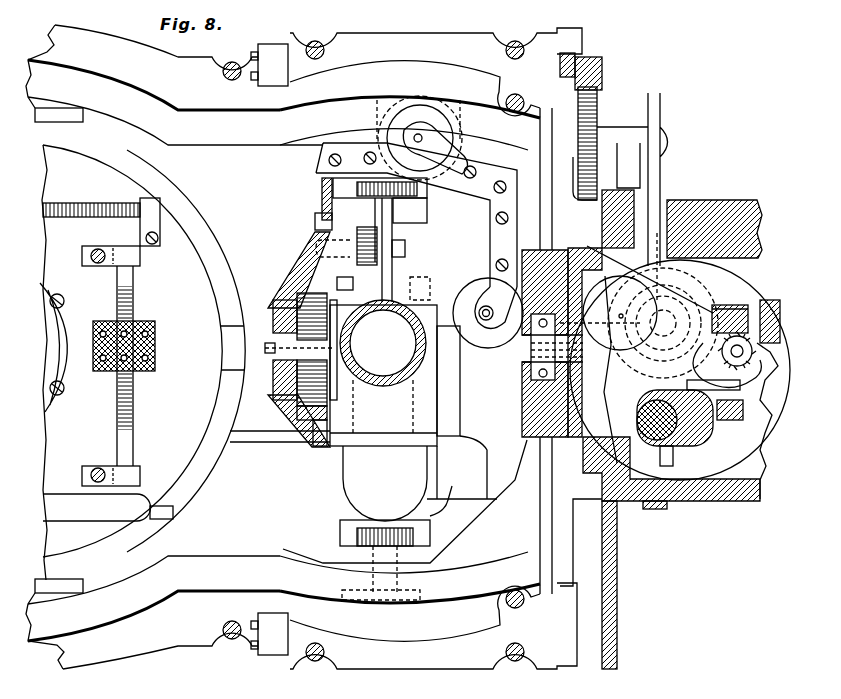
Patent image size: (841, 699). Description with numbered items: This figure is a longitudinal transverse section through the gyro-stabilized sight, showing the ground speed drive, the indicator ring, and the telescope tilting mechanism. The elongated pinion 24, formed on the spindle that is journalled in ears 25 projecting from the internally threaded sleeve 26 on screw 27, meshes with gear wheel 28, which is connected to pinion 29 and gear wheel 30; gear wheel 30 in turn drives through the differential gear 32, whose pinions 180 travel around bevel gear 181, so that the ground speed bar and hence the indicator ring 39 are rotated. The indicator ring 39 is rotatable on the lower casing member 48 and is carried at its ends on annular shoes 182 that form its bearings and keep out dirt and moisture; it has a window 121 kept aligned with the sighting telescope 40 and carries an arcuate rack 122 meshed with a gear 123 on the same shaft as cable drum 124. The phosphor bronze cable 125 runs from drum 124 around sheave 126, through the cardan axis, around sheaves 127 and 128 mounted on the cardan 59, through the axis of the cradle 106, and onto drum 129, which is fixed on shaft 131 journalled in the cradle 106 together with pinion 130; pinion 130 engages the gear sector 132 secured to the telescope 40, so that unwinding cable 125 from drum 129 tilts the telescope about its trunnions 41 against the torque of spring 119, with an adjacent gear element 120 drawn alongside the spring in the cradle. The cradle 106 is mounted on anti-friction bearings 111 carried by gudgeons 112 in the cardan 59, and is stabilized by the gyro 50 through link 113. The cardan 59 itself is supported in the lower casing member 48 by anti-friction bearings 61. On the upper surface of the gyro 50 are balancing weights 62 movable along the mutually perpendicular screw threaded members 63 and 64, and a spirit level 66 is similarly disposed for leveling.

The elongated pinion 24 is at (716, 436).
The ears 25 is at (733, 424).
The internally threaded sleeve 26 is at (698, 448).
The screw 27 is at (668, 462).
The gear wheel 28 is at (675, 393).
The pinion 29 is at (738, 336).
The gear wheel 30 is at (736, 300).
The differential gear 32 is at (716, 300).
The indicator ring 39 is at (433, 657).
The sighting telescope 40 is at (398, 386).
The trunnions 41 is at (432, 340).
The lower casing member 48 is at (160, 640).
The gyro 50 is at (187, 433).
The cardan 59 is at (237, 560).
The anti-friction bearings 61 is at (525, 372).
The balancing weights 62 is at (157, 346).
The screw threaded member 63 is at (110, 200).
The screw threaded member 64 is at (135, 300).
The spirit level 66 is at (57, 506).
The cradle 106 is at (441, 495).
The anti-friction bearings 111 is at (372, 196).
The gudgeons 112 is at (387, 554).
The link 113 is at (283, 443).
The spring 119 is at (300, 274).
The gear 120 is at (285, 301).
The window 121 is at (445, 524).
The arcuate rack 122 is at (600, 70).
The gear 123 is at (597, 108).
The cable drum 124 is at (661, 110).
The phosphor bronze cable 125 is at (660, 196).
The sheave 126 is at (606, 369).
The sheave 127 is at (419, 245).
The sheave 128 is at (422, 138).
The drum 129 is at (405, 245).
The pinion 130 is at (316, 228).
The shaft 131 is at (345, 257).
The gear sector 132 is at (383, 343).
The pinions 180 is at (688, 281).
The bevel gear 181 is at (620, 313).
The annular shoes 182 is at (272, 48).